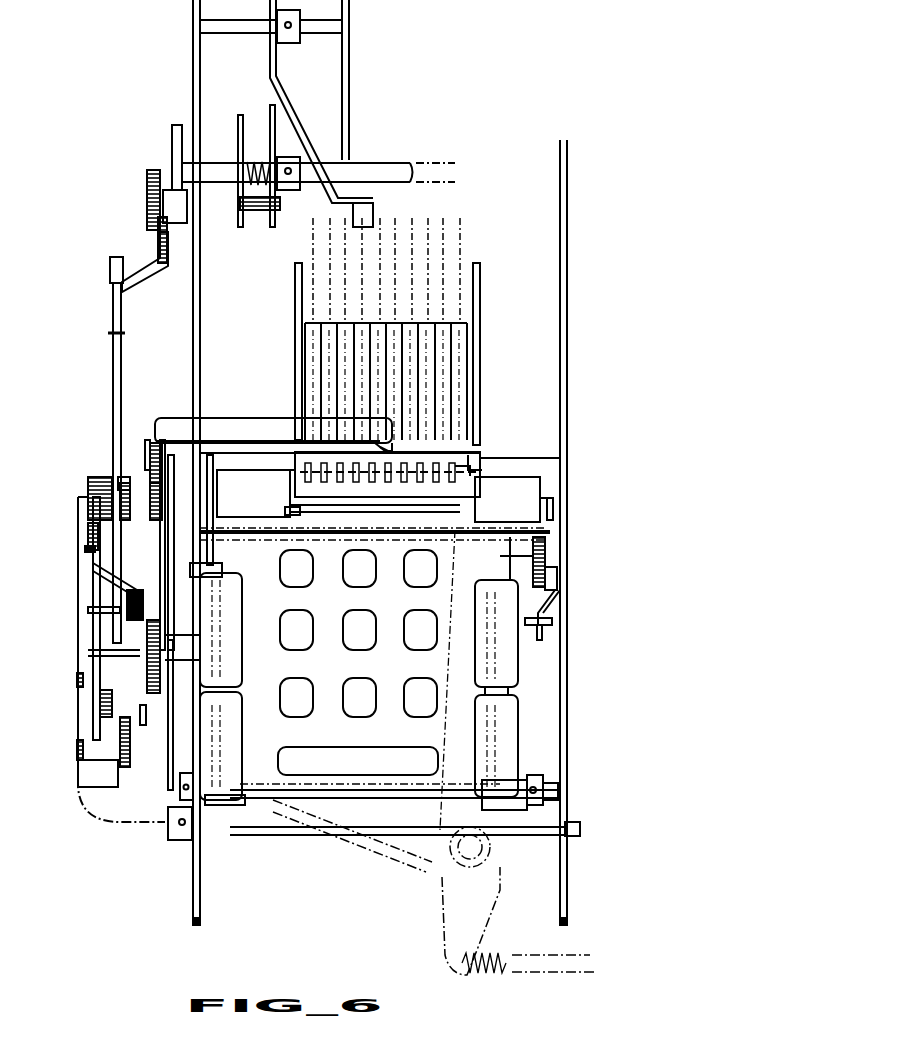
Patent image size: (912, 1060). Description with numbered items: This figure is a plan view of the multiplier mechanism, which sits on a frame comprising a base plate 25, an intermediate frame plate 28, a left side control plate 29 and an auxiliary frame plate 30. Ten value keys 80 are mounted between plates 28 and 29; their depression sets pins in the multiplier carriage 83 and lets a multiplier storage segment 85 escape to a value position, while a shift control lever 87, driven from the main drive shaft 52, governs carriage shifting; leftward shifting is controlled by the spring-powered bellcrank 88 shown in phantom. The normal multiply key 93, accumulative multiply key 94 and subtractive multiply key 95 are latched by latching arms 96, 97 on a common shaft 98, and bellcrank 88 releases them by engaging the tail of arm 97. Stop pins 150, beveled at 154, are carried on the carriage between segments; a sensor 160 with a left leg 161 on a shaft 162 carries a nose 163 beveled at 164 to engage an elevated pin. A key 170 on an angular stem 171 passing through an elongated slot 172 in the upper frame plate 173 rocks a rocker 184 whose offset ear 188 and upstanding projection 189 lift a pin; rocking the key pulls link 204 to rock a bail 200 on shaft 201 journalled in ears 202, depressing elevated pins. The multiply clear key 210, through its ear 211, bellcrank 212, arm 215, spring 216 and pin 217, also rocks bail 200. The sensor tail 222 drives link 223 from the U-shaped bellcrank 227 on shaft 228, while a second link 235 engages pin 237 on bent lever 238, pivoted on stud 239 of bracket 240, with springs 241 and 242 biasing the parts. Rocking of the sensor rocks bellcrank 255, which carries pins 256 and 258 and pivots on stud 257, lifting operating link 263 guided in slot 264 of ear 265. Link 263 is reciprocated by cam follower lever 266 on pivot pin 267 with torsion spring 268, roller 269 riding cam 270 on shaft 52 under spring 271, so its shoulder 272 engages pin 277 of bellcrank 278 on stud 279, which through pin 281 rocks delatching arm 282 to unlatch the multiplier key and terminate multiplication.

The base plate 25 is at (138, 815).
The intermediate frame plate 28 is at (566, 913).
The left side control plate 29 is at (192, 897).
The auxiliary frame plate 30 is at (350, 84).
The main drive shaft 52 is at (392, 163).
The value keys 80 is at (411, 581).
The multiplier carriage 83 is at (493, 369).
The multiplier storage segment 85 is at (463, 258).
The shift control lever 87 is at (308, 148).
The spring-powered bellcrank 88 is at (396, 856).
The normal multiply key 93 is at (478, 706).
The accumulative multiply key 94 is at (244, 706).
The subtractive multiply key 95 is at (242, 608).
The latching arm 96 is at (500, 810).
The latching arm 97 is at (219, 806).
The latch shaft 98 is at (556, 785).
The stop pins 150 is at (465, 470).
The bevel 154 is at (471, 462).
The sensor 160 is at (266, 420).
The left leg 161 is at (151, 440).
The shaft 162 is at (150, 452).
The nose 163 is at (388, 448).
The bevel 164 is at (371, 438).
The key 170 is at (165, 562).
The angular stem 171 is at (214, 566).
The elongated slot 172 is at (216, 605).
The upper frame plate 173 is at (345, 672).
The rocker 184 is at (217, 489).
The offset ear 188 is at (248, 464).
The upstanding projection 189 is at (386, 466).
The bail 200 is at (512, 484).
The shaft 201 is at (300, 514).
The ears 202 is at (555, 523).
The link 204 is at (205, 532).
The multiply clear key 210 is at (485, 594).
The ear 211 is at (530, 626).
The bellcrank 212 is at (556, 608).
The arm 215 is at (556, 500).
The spring 216 is at (511, 562).
The pin 217 is at (551, 575).
The tail 222 is at (150, 482).
The link 223 is at (165, 738).
The U-shaped bellcrank 227 is at (166, 832).
The shaft 228 is at (285, 822).
The second link 235 is at (172, 500).
The pin 237 is at (143, 716).
The bent lever 238 is at (128, 768).
The pivot stud 239 is at (78, 753).
The bracket 240 is at (80, 781).
The spring 241 is at (100, 704).
The spring 242 is at (160, 656).
The bellcrank 255 is at (93, 629).
The pin 256 is at (100, 653).
The pivot stud 257 is at (78, 681).
The pin 258 is at (100, 610).
The operating link 263 is at (113, 306).
The guide slot 264 is at (117, 478).
The ear 265 is at (88, 481).
The cam follower lever 266 is at (142, 255).
The pivot pin 267 is at (110, 264).
The torsion spring 268 is at (123, 330).
The roller 269 is at (187, 214).
The cam 270 is at (177, 128).
The spring 271 is at (147, 194).
The shoulder 272 is at (95, 565).
The pin 277 is at (124, 522).
The bellcrank 278 is at (88, 528).
The pivot stud 279 is at (86, 549).
The pin 281 is at (176, 637).
The delatching arm 282 is at (186, 661).